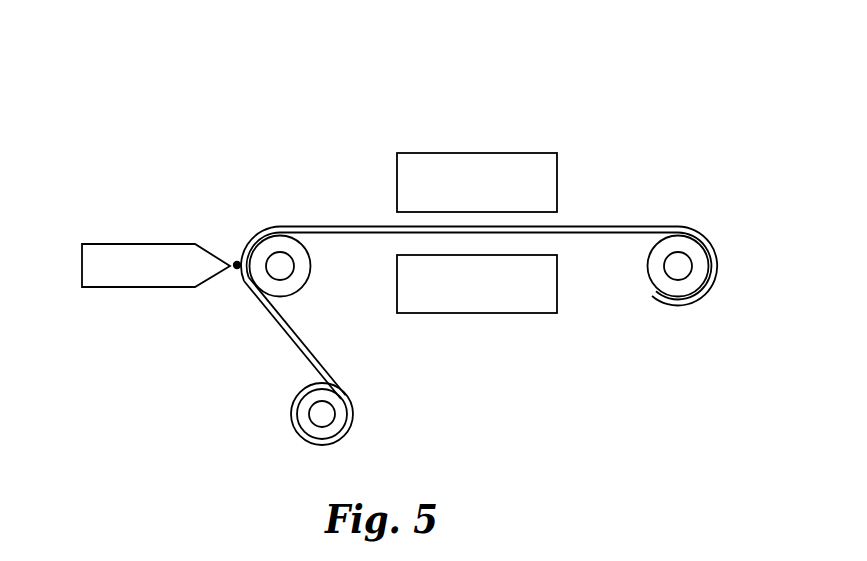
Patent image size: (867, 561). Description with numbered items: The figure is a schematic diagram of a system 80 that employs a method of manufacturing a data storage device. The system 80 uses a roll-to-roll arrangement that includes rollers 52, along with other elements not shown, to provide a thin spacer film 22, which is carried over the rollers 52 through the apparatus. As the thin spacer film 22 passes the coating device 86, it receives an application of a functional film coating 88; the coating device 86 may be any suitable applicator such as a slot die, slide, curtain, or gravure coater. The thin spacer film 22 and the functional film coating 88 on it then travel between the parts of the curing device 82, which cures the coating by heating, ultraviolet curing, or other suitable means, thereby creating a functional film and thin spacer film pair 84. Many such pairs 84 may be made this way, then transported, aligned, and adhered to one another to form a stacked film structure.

The system 80 is at (414, 236).
The curing device 82 is at (382, 140).
The functional film and thin spacer film pair 84 is at (728, 222).
The rollers 52 is at (295, 280).
The thin spacer film 22 is at (283, 325).
The coating device 86 is at (100, 273).
The functional film coating 88 is at (238, 261).